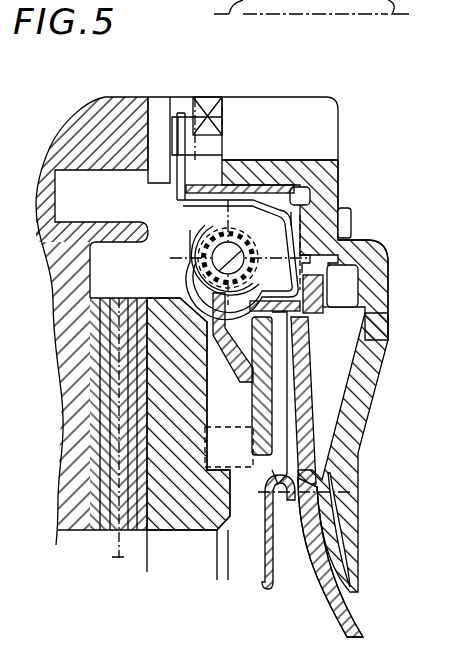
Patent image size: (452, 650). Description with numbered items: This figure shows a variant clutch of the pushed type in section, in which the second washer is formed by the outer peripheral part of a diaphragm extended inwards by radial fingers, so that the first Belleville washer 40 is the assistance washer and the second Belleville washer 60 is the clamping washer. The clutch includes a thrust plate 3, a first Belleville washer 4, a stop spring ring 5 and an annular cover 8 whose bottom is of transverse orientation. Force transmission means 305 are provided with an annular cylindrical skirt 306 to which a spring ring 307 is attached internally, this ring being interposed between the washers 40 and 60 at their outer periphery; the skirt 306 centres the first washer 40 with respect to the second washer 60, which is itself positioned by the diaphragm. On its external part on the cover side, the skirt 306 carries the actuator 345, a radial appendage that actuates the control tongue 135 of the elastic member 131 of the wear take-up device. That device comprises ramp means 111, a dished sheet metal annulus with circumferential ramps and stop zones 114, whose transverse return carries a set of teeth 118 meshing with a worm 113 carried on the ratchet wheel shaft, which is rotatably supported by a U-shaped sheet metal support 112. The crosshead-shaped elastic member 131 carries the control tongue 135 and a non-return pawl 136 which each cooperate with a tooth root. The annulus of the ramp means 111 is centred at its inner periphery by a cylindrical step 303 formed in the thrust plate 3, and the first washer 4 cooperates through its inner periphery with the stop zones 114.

The thrust plate 3 is at (200, 534).
The first Belleville washer 4 is at (3, 271).
The stop spring ring 5 is at (4, 196).
The cover 8 is at (342, 164).
The first Belleville washer 40 is at (278, 372).
The second Belleville washer 60 is at (303, 399).
The ramp means 111 is at (263, 474).
The support 112 is at (287, 170).
The worm 113 is at (193, 234).
The stop zones 114 is at (275, 430).
The set of teeth 118 is at (199, 298).
The elastic member 131 is at (290, 215).
The control tongue 135 is at (222, 256).
The non-return pawl 136 is at (278, 240).
The cylindrical step 303 is at (224, 440).
The force transmission means 305 is at (337, 314).
The annular cylindrical skirt 306 is at (206, 350).
The spring ring 307 is at (288, 346).
The actuator 345 is at (332, 266).